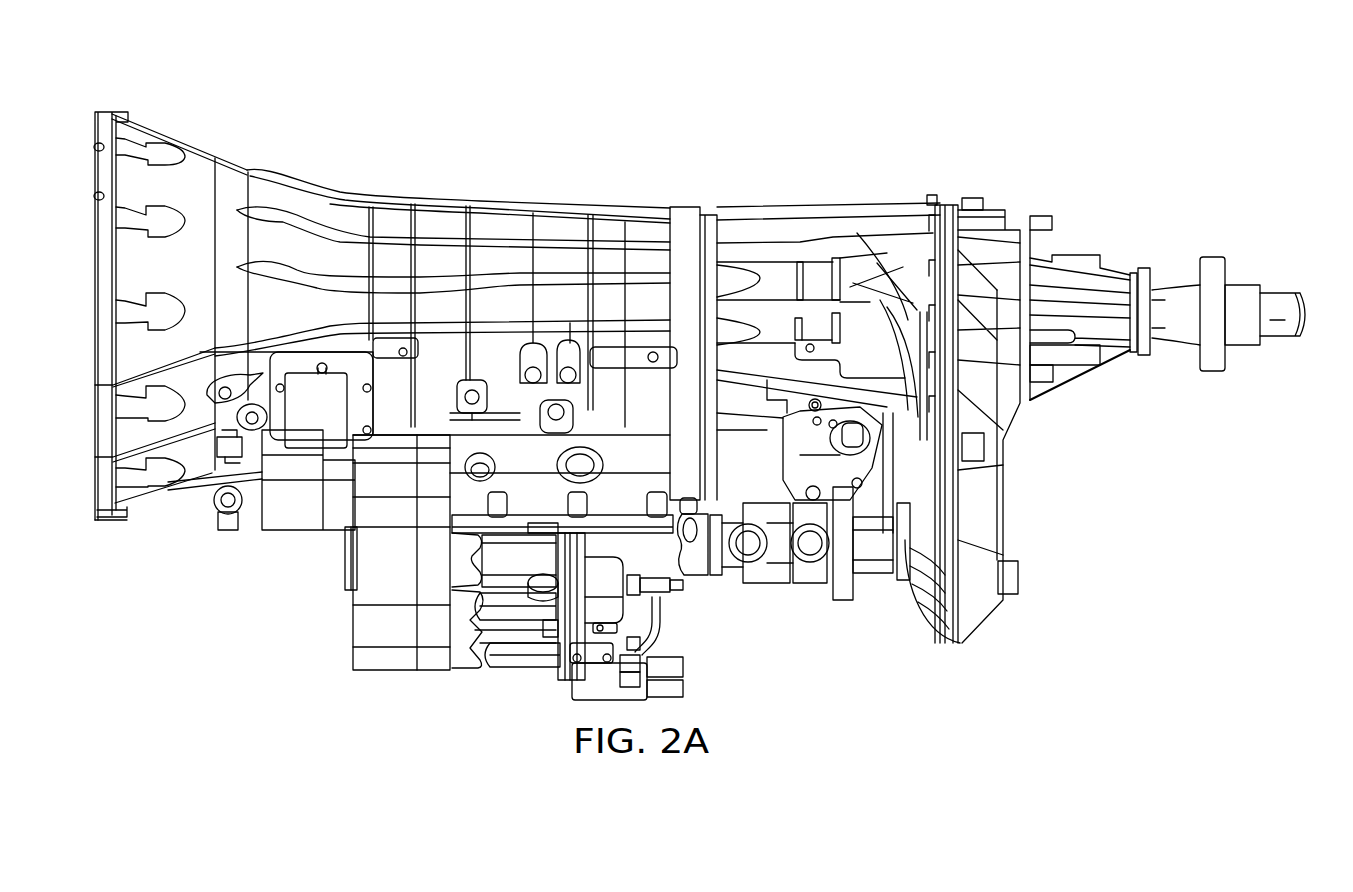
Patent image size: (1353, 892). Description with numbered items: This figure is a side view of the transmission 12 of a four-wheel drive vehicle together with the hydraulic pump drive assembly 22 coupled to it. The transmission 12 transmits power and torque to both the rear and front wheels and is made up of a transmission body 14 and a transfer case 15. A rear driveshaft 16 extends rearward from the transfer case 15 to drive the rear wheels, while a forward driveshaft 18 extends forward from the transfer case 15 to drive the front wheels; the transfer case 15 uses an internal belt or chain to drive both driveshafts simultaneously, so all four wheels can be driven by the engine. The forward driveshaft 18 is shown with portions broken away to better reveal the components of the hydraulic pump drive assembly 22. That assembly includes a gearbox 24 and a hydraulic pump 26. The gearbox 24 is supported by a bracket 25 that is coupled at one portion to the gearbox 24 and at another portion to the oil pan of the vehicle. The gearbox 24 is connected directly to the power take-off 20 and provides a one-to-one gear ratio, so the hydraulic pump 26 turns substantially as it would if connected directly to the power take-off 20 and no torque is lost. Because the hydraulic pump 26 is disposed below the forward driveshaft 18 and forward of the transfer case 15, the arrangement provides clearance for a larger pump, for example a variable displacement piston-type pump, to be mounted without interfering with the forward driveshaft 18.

The transmission 12 is at (357, 91).
The transmission body 14 is at (459, 173).
The transfer case 15 is at (1045, 550).
The rear driveshaft 16 is at (1272, 297).
The forward driveshaft 18 is at (688, 563).
The power take-off 20 is at (278, 510).
The hydraulic pump drive assembly 22 is at (481, 688).
The gearbox 24 is at (356, 628).
The bracket 25 is at (343, 547).
The hydraulic pump 26 is at (522, 632).